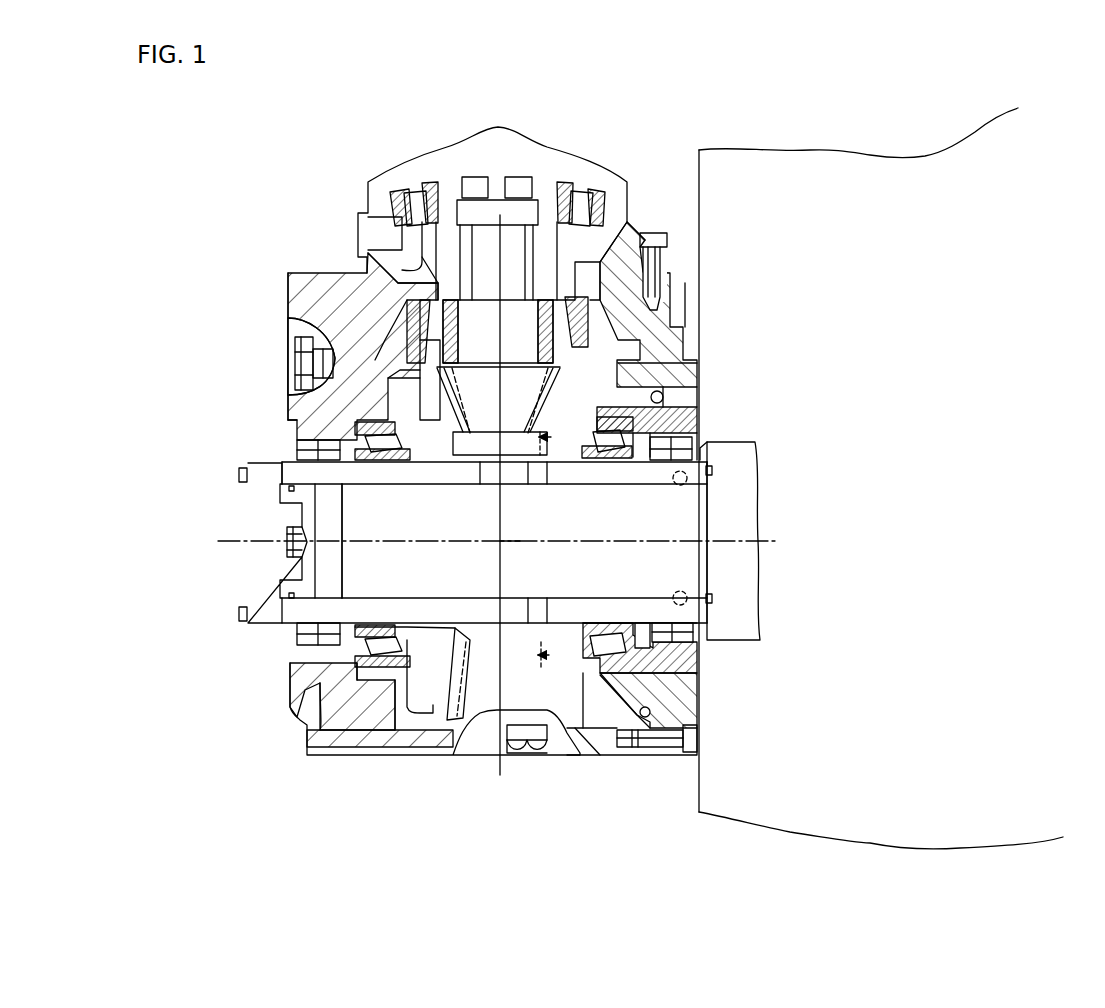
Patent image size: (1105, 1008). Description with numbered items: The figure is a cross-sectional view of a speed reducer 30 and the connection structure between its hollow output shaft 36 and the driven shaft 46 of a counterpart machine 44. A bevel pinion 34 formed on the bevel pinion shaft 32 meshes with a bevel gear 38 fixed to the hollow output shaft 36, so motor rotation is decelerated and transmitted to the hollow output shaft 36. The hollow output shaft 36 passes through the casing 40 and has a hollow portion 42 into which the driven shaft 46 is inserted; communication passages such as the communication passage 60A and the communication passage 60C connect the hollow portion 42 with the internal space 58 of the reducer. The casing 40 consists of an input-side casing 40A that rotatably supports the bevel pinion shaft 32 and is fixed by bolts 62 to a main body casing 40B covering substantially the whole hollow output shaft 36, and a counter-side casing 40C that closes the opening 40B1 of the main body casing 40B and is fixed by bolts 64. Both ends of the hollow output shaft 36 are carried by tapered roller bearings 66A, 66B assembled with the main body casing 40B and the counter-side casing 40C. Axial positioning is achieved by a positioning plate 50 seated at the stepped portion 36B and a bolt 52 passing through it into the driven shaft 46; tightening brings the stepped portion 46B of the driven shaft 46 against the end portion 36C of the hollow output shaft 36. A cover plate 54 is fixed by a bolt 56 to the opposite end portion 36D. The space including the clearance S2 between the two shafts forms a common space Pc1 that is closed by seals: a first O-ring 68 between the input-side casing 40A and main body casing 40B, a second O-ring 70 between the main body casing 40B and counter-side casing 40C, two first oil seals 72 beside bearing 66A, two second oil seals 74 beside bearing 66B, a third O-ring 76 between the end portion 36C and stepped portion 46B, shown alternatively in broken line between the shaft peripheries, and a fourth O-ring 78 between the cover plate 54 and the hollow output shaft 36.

The speed reducer 30 is at (308, 207).
The input-side casing 40A is at (624, 232).
The first O-ring 68 is at (588, 262).
The counterpart machine 44 is at (848, 160).
The main body casing 40B is at (305, 273).
The casing 40 is at (278, 305).
The bolts 62 is at (662, 236).
The bevel pinion shaft 32 is at (668, 318).
The common space Pc1 is at (398, 386).
The bevel pinion 34 is at (548, 380).
The second O-ring 70 is at (650, 368).
The first oil seals 72 is at (320, 440).
The internal space 58 is at (557, 537).
The second oil seals 74 is at (665, 428).
The end portion of hollow output shaft 36D is at (280, 466).
The stepped portion of driven shaft 46B is at (712, 455).
The third O-ring 76 is at (714, 470).
The end portion of hollow output shaft 36C is at (710, 480).
The bolt 52 is at (308, 530).
The stepped portion of hollow output shaft 36B is at (338, 502).
The tapered roller bearing 66A is at (380, 442).
The clearance S2 is at (480, 489).
The communication passage 60A is at (535, 486).
The hollow output shaft 36 is at (584, 481).
The tapered roller bearing 66B is at (604, 445).
The driven shaft 46 is at (683, 525).
The cover plate 54 is at (260, 566).
The positioning plate 50 is at (328, 566).
The communication passage 60C is at (535, 600).
The hollow portion 42 is at (549, 561).
The bolt 56 is at (243, 622).
The fourth O-ring 78 is at (292, 600).
The bevel gear 38 is at (447, 672).
The counter-side casing 40C is at (672, 655).
The opening 40B1 is at (693, 714).
The bolts 64 is at (690, 742).